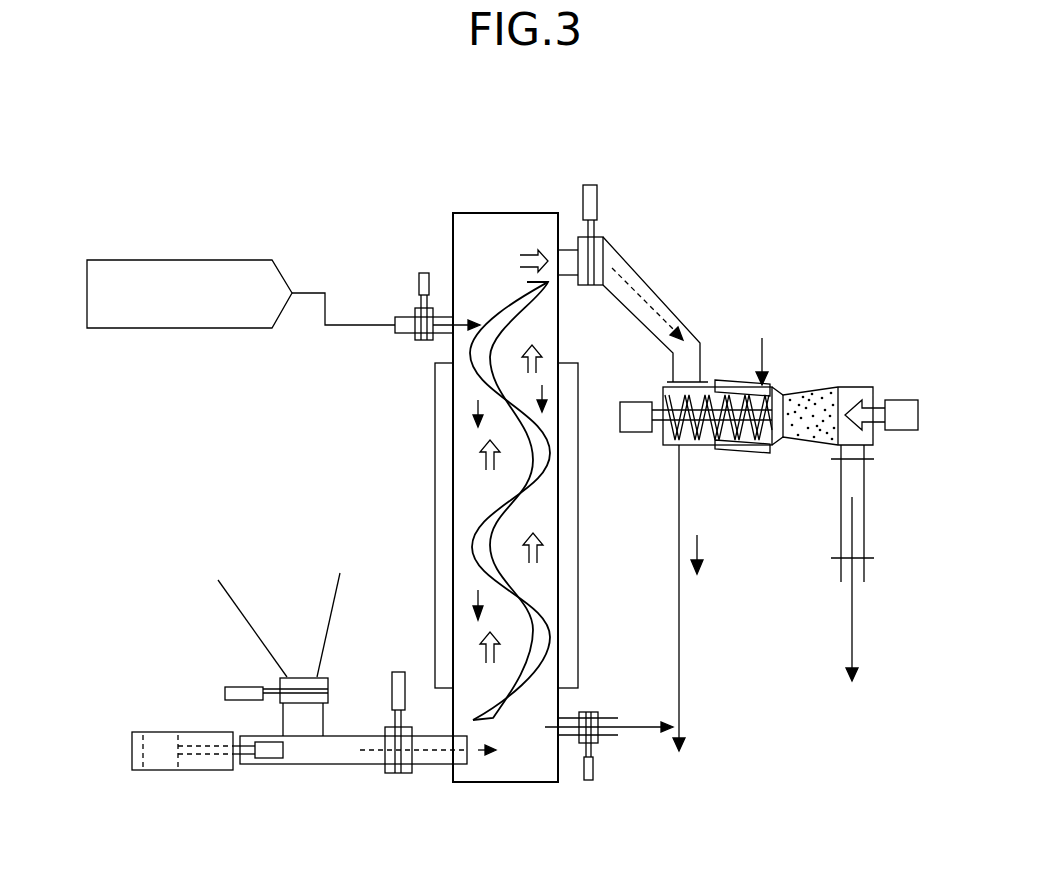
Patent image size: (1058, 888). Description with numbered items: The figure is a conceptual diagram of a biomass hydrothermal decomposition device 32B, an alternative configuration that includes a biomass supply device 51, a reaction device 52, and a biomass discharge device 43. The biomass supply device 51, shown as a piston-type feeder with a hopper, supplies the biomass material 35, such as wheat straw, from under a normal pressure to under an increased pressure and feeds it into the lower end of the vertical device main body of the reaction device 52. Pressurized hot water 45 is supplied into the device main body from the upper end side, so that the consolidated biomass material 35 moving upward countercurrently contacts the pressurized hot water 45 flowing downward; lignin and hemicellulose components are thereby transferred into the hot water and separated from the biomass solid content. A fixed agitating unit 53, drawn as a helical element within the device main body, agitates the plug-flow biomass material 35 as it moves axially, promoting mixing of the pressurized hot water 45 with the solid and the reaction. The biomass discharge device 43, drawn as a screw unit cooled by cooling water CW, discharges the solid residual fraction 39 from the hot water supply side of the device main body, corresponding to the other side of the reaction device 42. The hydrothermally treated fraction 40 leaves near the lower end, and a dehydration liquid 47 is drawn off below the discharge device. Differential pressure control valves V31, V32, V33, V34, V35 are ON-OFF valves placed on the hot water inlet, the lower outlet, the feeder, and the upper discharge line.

The biomass hydrothermal decomposition device 32B is at (527, 183).
The biomass material 35 is at (283, 580).
The solid residual fraction 39 is at (650, 292).
The hydrothermally treated fraction 40 is at (645, 733).
The reaction device 42 is at (585, 364).
The biomass discharge device 43 is at (894, 370).
The pressurized hot water 45 is at (222, 259).
The dehydration liquid 47 is at (702, 548).
The biomass supply device 51 is at (278, 778).
The reaction device 52 is at (452, 350).
The fixed agitating unit 53 is at (525, 478).
The differential pressure control valve V31 is at (423, 271).
The differential pressure control valve V32 is at (588, 783).
The differential pressure control valve V33 is at (225, 693).
The differential pressure control valve V34 is at (398, 671).
The differential pressure control valve V35 is at (598, 196).
The cooling water CW is at (763, 350).